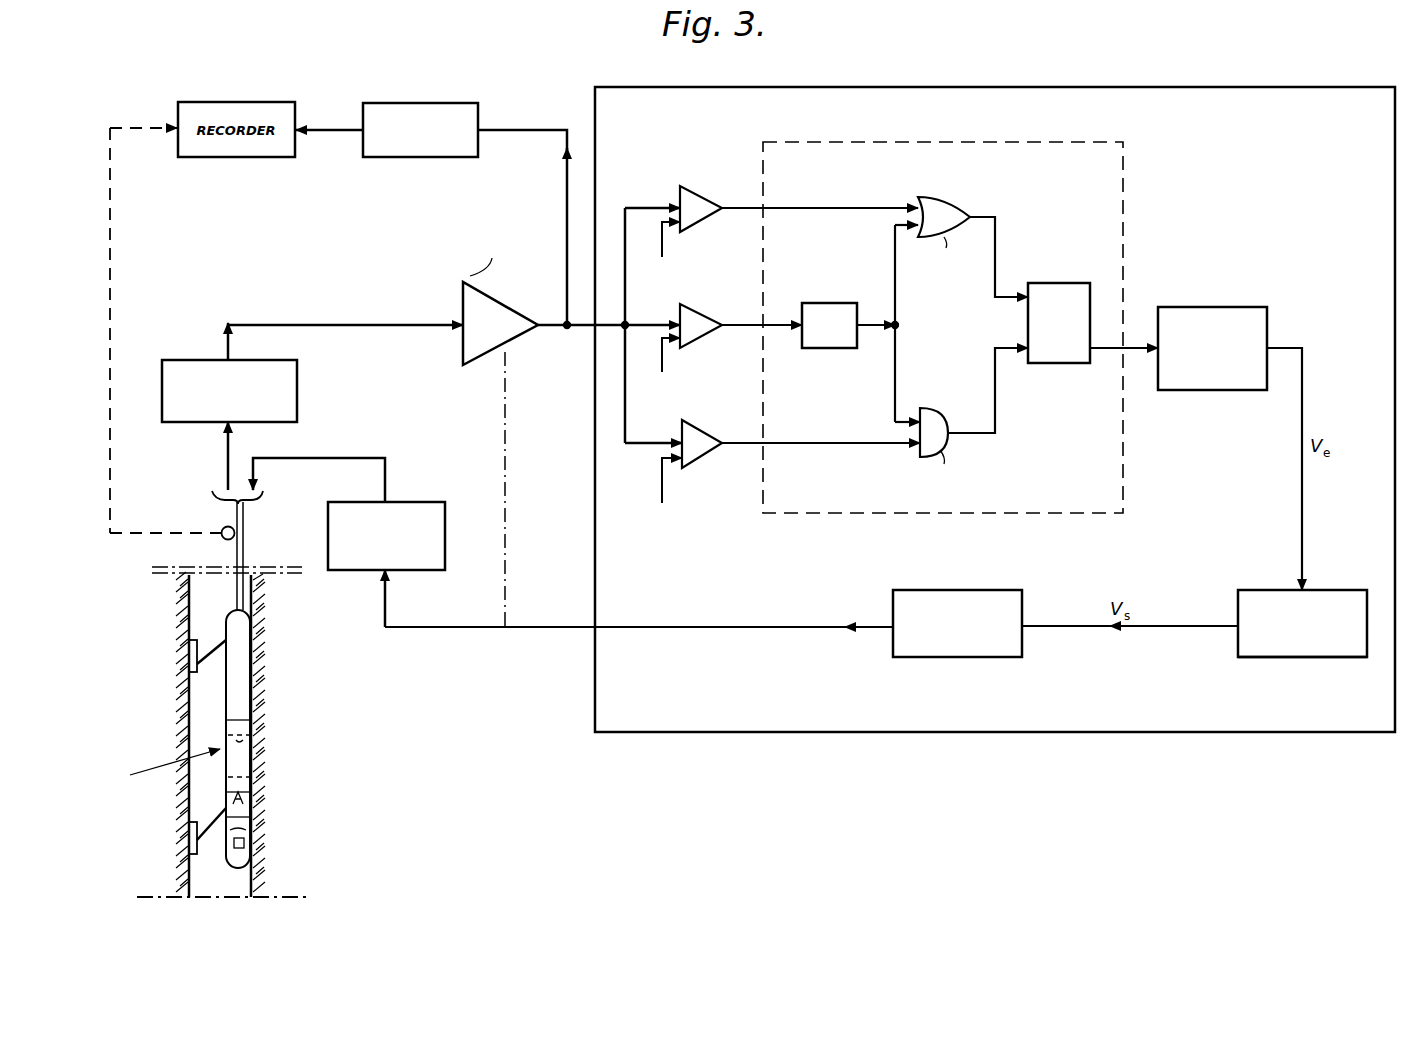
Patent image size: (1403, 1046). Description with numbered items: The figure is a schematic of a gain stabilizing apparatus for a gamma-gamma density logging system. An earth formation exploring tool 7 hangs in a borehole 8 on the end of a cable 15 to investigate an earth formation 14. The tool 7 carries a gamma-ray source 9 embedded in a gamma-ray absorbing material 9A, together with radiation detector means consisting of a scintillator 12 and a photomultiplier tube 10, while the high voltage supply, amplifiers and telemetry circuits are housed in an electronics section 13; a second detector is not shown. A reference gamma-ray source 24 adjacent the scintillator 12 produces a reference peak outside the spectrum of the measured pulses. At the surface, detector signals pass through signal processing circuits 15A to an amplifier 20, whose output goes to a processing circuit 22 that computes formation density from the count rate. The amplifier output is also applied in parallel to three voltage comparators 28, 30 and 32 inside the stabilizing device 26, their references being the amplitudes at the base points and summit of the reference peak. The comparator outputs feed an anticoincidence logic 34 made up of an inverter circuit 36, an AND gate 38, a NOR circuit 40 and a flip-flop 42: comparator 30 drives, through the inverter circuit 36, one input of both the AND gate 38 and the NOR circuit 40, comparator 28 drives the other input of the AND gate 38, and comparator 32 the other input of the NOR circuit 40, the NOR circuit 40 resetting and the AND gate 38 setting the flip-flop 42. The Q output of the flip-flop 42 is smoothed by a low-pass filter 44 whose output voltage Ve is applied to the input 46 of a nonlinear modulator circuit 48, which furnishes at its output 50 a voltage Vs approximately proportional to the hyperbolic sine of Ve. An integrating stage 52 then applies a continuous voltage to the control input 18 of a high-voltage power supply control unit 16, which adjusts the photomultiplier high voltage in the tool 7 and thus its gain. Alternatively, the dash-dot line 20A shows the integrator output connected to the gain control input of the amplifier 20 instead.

The earth formation exploring tool 7 is at (166, 777).
The borehole 8 is at (190, 712).
The gamma-ray source 9 is at (252, 850).
The gamma-ray absorbing material 9A is at (243, 832).
The photomultiplier tube 10 is at (255, 742).
The scintillator 12 is at (255, 780).
The electronics section 13 is at (252, 665).
The earth formation 14 is at (350, 700).
The cable 15 is at (235, 583).
The signal processing circuits 15A is at (297, 380).
The high-voltage power supply control unit 16 is at (420, 502).
The control input 18 is at (390, 572).
The amplifier 20 is at (463, 340).
The dash-dot line 20A is at (505, 487).
The processing circuit 22 is at (406, 102).
The gamma-ray source 24 is at (258, 808).
The device 26 is at (1131, 87).
The voltage comparator 28 is at (700, 428).
The voltage comparator 30 is at (698, 307).
The voltage comparator 32 is at (696, 190).
The anticoincidence logic 34 is at (1015, 142).
The inverter circuit 36 is at (828, 302).
The AND gate 38 is at (936, 412).
The NOR circuit 40 is at (955, 207).
The flip-flop 42 is at (1057, 364).
The low-pass filter 44 is at (1230, 306).
The input 46 is at (1308, 588).
The nonlinear modulator circuit 48 is at (1290, 657).
The output 50 is at (1238, 630).
The integrating stage 52 is at (988, 590).